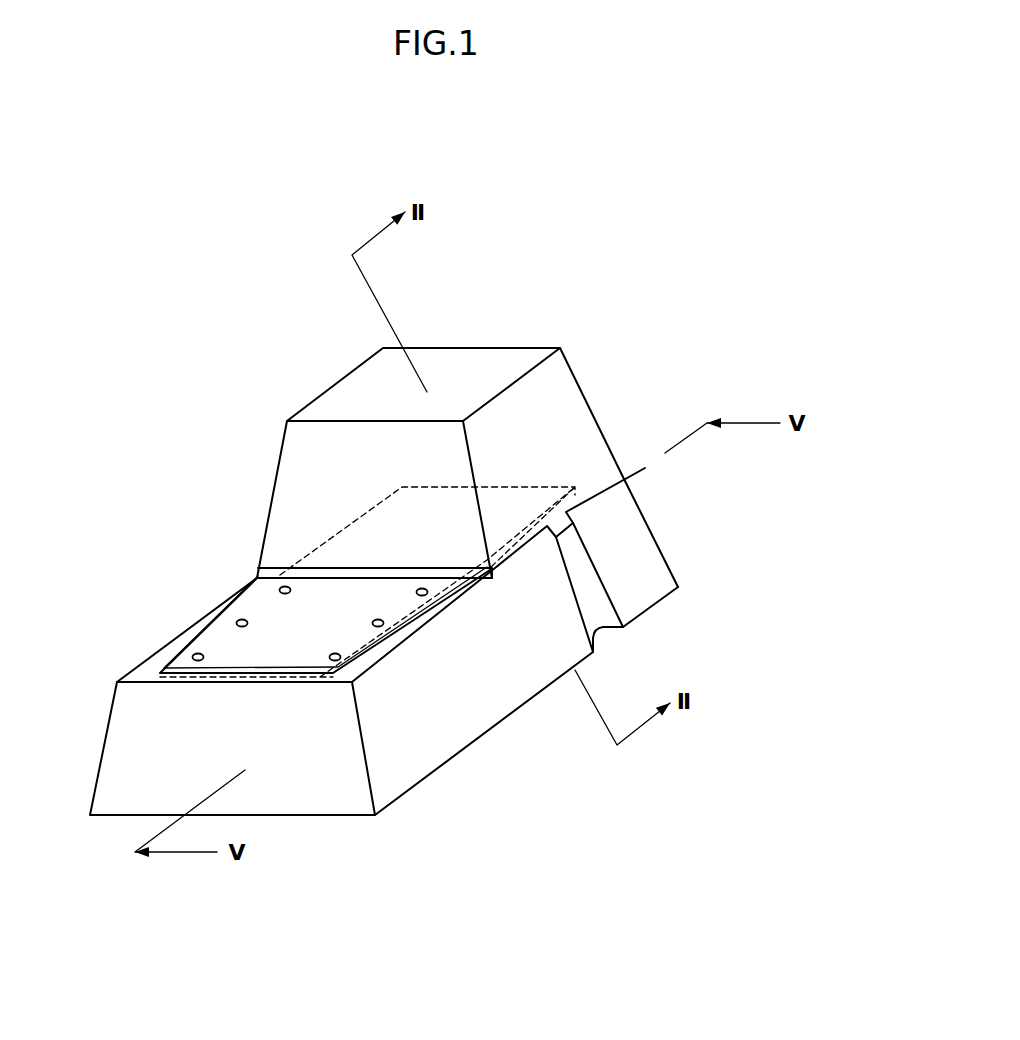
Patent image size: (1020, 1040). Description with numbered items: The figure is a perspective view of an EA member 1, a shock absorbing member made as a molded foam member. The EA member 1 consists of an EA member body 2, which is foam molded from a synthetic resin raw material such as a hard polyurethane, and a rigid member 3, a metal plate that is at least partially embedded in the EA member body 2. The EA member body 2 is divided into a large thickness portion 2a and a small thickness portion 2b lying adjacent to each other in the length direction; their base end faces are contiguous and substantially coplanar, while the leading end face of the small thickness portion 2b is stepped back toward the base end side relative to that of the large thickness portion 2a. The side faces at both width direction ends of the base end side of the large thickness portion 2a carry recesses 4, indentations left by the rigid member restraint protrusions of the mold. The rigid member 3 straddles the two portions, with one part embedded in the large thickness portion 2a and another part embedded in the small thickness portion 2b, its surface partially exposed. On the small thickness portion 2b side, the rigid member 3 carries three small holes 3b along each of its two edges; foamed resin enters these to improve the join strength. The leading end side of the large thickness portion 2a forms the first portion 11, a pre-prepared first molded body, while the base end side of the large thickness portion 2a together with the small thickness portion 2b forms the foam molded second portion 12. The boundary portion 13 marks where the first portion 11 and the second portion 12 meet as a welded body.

The EA member 1 is at (527, 321).
The EA member body 2 is at (267, 528).
The large thickness portion 2a is at (347, 325).
The small thickness portion 2b is at (202, 552).
The rigid member 3 is at (282, 647).
The small holes 3b is at (258, 580).
The recesses 4 is at (592, 602).
The first portion 11 is at (588, 335).
The second portion 12 is at (650, 457).
The boundary portion 13 is at (322, 569).